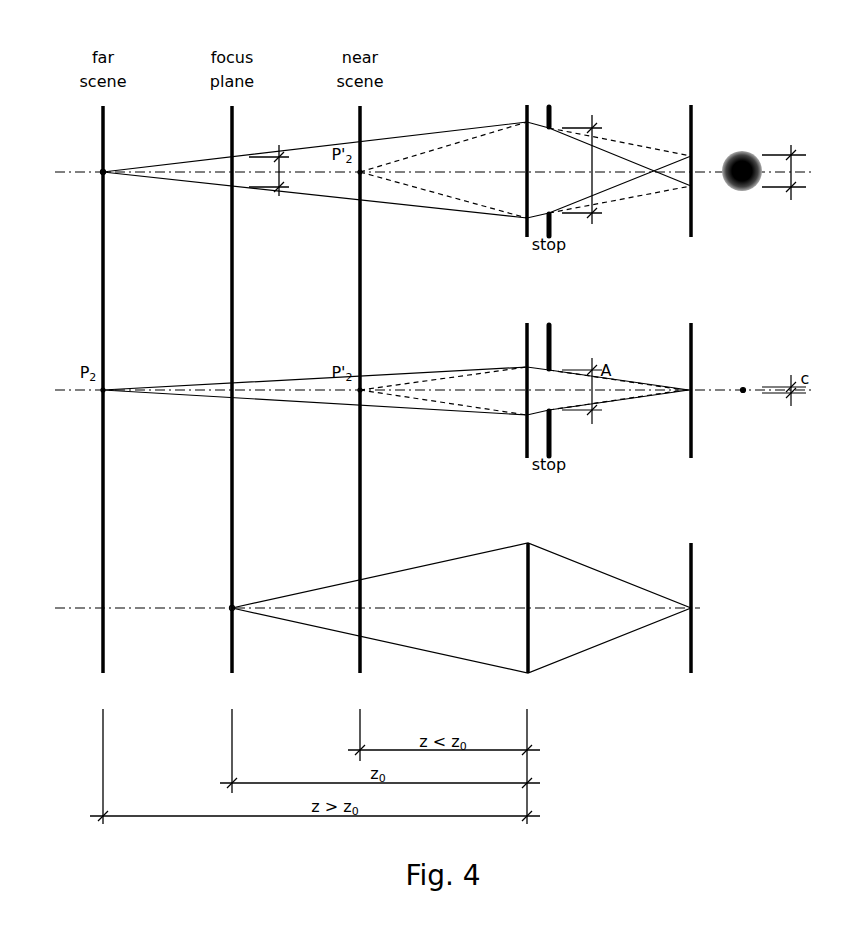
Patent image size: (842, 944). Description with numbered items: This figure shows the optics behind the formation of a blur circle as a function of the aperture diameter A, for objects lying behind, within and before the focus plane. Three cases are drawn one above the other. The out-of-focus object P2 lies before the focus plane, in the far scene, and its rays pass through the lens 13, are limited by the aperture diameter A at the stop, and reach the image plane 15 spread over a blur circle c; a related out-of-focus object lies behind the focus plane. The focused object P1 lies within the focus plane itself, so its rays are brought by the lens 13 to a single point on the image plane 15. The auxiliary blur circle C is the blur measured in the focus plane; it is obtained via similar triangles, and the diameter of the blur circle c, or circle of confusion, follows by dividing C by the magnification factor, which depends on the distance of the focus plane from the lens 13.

The lens 13 is at (530, 681).
The image sensor 15 is at (691, 539).
The aperture diameter A is at (584, 169).
The auxiliary blur circle C is at (275, 170).
The blur circle c is at (766, 172).
The focused object P1 is at (220, 596).
The out-of-focus object P2 is at (92, 160).